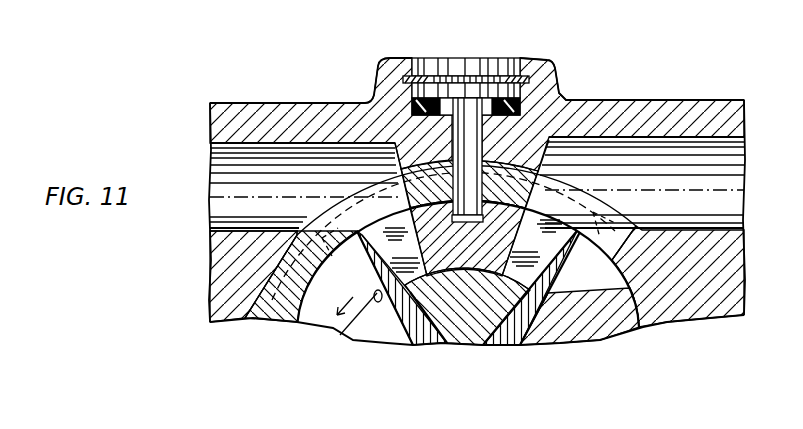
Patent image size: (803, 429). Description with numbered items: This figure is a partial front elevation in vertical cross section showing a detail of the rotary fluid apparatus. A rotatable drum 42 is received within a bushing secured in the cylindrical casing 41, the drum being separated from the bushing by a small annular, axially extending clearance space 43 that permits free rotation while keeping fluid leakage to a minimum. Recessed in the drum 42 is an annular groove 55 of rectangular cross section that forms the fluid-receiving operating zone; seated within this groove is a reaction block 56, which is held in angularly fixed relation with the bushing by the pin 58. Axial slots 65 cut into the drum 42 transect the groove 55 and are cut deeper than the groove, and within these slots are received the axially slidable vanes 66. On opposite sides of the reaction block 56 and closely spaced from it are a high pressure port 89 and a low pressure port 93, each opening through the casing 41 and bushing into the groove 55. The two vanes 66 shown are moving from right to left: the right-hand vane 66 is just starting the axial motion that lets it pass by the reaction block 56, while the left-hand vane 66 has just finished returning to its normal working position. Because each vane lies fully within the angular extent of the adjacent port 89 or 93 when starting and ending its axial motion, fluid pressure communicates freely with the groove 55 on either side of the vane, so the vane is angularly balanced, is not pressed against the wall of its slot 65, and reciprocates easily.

The casing 41 is at (712, 316).
The drum 42 is at (567, 338).
The clearance space 43 is at (645, 313).
The annular groove 55 is at (605, 323).
The reaction block 56 is at (494, 260).
The pin 58 is at (468, 110).
The axial slot 65 is at (348, 338).
The vane 66 is at (385, 346).
The high pressure port 89 is at (553, 187).
The low pressure port 93 is at (352, 197).